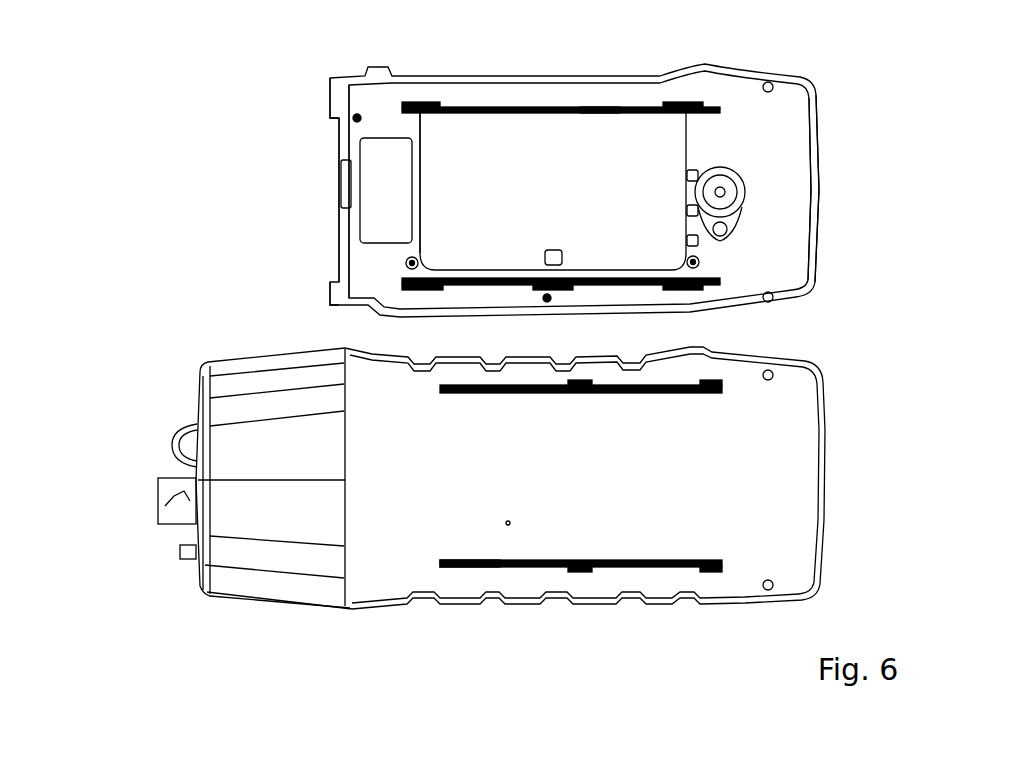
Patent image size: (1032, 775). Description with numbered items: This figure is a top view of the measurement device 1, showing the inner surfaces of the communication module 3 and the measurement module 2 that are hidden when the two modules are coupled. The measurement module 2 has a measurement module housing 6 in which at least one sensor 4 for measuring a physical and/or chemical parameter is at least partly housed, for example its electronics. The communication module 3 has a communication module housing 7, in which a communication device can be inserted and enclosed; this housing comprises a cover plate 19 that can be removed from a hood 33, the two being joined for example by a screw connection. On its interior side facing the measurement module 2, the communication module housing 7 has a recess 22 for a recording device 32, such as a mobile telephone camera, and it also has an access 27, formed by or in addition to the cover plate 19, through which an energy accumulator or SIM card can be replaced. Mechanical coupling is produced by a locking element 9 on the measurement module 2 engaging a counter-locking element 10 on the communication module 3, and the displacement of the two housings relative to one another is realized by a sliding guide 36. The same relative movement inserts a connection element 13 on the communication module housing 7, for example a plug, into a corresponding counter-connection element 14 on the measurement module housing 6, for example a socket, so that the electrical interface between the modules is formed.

The measurement device 1 is at (106, 83).
The measurement module 2 is at (127, 404).
The communication module 3 is at (302, 168).
The sensor 4 is at (151, 201).
The measurement module housing 6 is at (279, 581).
The communication module housing 7 is at (359, 260).
The locking element 9 is at (538, 566).
The counter-locking element 10 is at (435, 108).
The connection element 13 is at (334, 106).
The counter-connection element 14 is at (353, 600).
The cover plate 19 is at (356, 225).
The recess 22 is at (737, 191).
The access 27 is at (453, 133).
The recording device 32 is at (730, 192).
The hood 33 is at (812, 281).
The sliding guide 36 is at (598, 107).